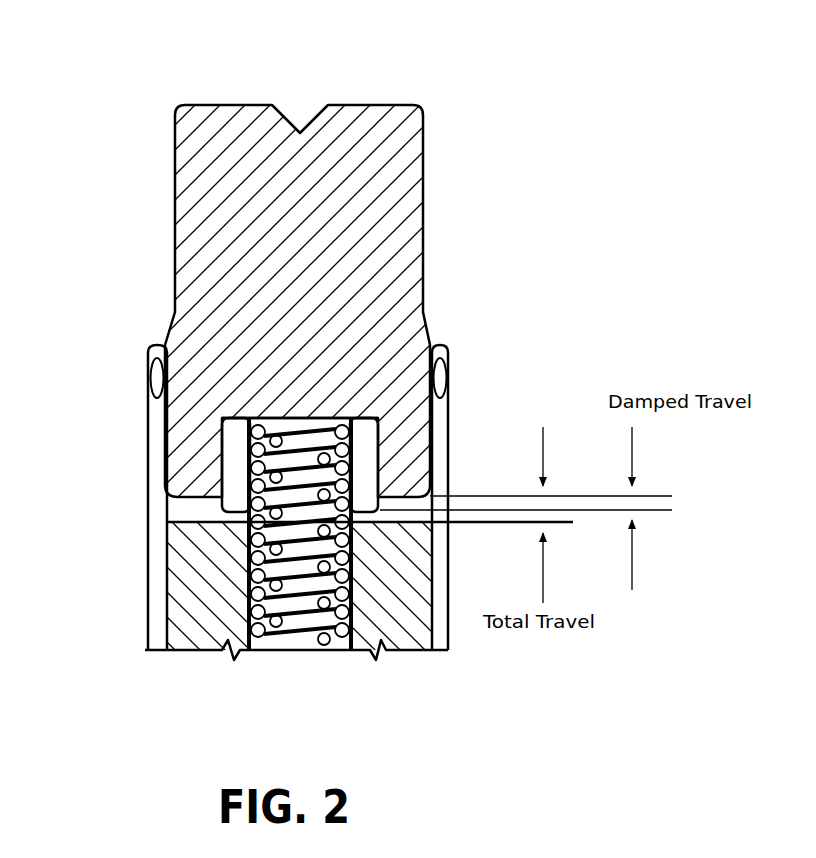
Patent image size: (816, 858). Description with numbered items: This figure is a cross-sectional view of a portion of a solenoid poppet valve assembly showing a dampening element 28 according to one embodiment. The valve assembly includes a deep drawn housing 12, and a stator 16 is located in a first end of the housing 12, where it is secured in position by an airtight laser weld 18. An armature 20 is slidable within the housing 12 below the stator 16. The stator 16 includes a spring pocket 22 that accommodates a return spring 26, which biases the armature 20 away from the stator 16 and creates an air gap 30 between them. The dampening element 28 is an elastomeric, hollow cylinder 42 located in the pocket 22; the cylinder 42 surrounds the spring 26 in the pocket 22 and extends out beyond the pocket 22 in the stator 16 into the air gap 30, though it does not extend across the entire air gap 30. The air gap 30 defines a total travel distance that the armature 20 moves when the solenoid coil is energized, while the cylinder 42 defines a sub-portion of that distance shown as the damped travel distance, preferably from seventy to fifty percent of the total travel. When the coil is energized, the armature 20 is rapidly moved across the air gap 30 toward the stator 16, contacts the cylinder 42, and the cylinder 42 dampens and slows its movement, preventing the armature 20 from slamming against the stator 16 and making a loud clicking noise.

The housing 12 is at (450, 433).
The stator 16 is at (400, 122).
The laser weld 18 is at (166, 383).
The armature 20 is at (197, 612).
The spring pocket 22 is at (310, 450).
The return spring 26 is at (256, 597).
The dampening element 28 is at (392, 428).
The air gap 30 is at (183, 510).
The elastomeric hollow cylinder 42 is at (360, 437).